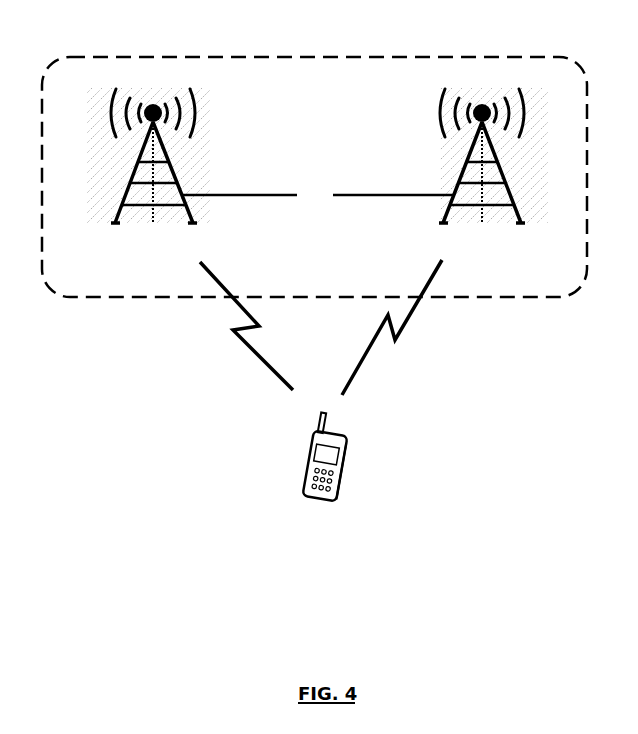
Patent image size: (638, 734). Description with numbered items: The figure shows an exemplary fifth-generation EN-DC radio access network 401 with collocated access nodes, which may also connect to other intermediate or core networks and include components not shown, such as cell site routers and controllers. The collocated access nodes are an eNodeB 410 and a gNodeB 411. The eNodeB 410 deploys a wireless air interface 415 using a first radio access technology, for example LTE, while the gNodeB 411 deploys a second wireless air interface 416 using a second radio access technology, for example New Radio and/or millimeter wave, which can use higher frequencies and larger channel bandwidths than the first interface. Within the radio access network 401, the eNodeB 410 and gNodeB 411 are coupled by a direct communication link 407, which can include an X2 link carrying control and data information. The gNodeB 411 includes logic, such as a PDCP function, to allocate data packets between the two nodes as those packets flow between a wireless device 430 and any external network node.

The radio access network 401 is at (118, 53).
The direct communication link 407 is at (382, 195).
The eNodeB 410 is at (135, 183).
The gNodeB 411 is at (500, 188).
The wireless air interface 415 is at (238, 330).
The second wireless air interface 416 is at (398, 338).
The wireless device 430 is at (310, 490).